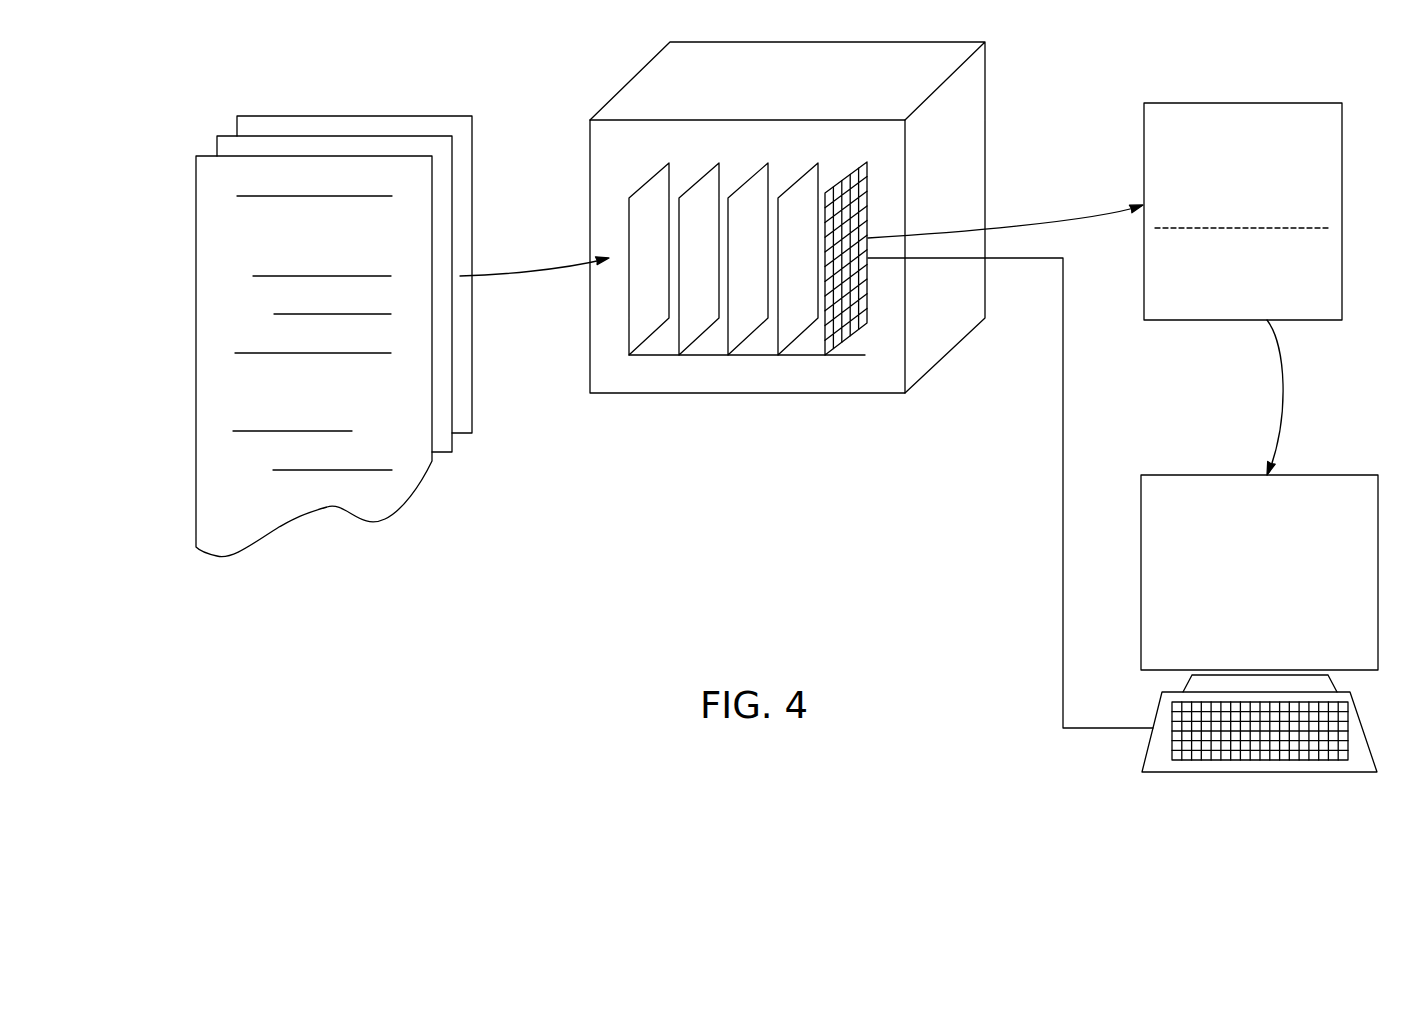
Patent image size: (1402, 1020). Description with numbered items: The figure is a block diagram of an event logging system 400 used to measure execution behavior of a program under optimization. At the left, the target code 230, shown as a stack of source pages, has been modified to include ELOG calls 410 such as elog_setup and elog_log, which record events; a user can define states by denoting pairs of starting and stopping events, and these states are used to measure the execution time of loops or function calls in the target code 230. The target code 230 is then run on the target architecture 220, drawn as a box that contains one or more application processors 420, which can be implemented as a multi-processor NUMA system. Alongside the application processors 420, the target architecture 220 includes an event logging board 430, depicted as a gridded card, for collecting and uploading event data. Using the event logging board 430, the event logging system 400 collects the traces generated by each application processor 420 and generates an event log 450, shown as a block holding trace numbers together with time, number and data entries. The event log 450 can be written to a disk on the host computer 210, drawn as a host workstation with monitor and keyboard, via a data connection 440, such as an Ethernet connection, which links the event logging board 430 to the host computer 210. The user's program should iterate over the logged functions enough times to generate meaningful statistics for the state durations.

The event logging system 400 is at (767, 563).
The ELOG calls 410 is at (232, 315).
The target code 230 is at (432, 461).
The target architecture 220 is at (618, 395).
The application processors 420 is at (798, 178).
The event logging board 430 is at (843, 355).
The data connection 440 is at (1062, 485).
The event log 450 is at (1313, 102).
The host computer 210 is at (1348, 473).